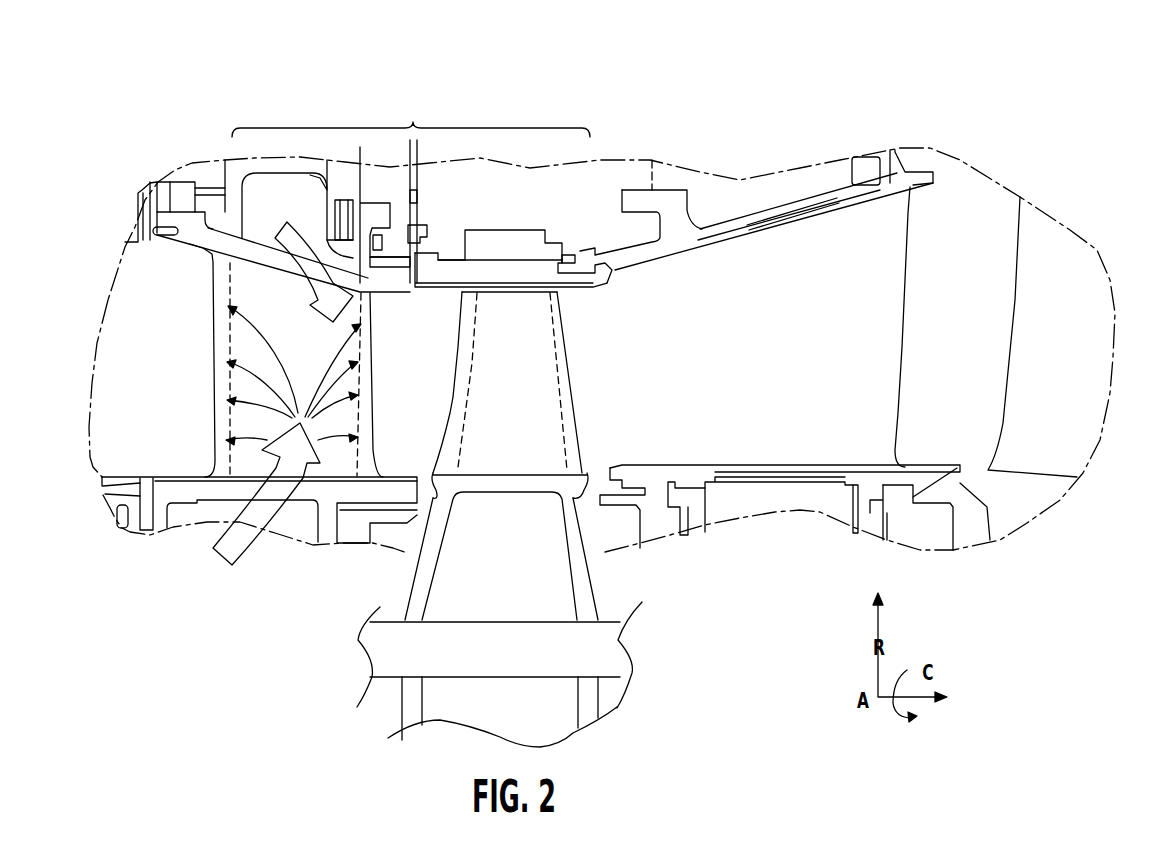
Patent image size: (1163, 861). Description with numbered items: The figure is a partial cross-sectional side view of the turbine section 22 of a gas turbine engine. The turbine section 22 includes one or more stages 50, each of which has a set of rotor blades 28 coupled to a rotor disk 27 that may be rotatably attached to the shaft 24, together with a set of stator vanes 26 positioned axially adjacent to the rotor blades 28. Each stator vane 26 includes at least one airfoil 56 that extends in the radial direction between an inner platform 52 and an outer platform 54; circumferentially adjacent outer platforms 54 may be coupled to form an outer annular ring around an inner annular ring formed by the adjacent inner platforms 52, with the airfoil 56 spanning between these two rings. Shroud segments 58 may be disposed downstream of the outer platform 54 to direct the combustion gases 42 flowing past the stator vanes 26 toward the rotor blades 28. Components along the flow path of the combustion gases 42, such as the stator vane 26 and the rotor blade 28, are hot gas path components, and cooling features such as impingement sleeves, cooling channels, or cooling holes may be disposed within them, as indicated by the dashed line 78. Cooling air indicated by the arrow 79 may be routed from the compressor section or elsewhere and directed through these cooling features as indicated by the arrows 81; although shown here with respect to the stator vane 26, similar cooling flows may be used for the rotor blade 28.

The turbine section 22 is at (808, 65).
The shaft 24 is at (598, 652).
The stator vane 26 is at (937, 255).
The rotor disk 27 is at (597, 585).
The rotor blade 28 is at (528, 387).
The combustion gases 42 is at (168, 370).
The stage 50 is at (413, 128).
The inner platform 52 is at (197, 492).
The outer platform 54 is at (214, 243).
The airfoil 56 is at (370, 414).
The shroud segment 58 is at (452, 268).
The cooling features 78 is at (227, 418).
The cooling air 79 is at (277, 520).
The cooling flow arrows 81 is at (243, 312).